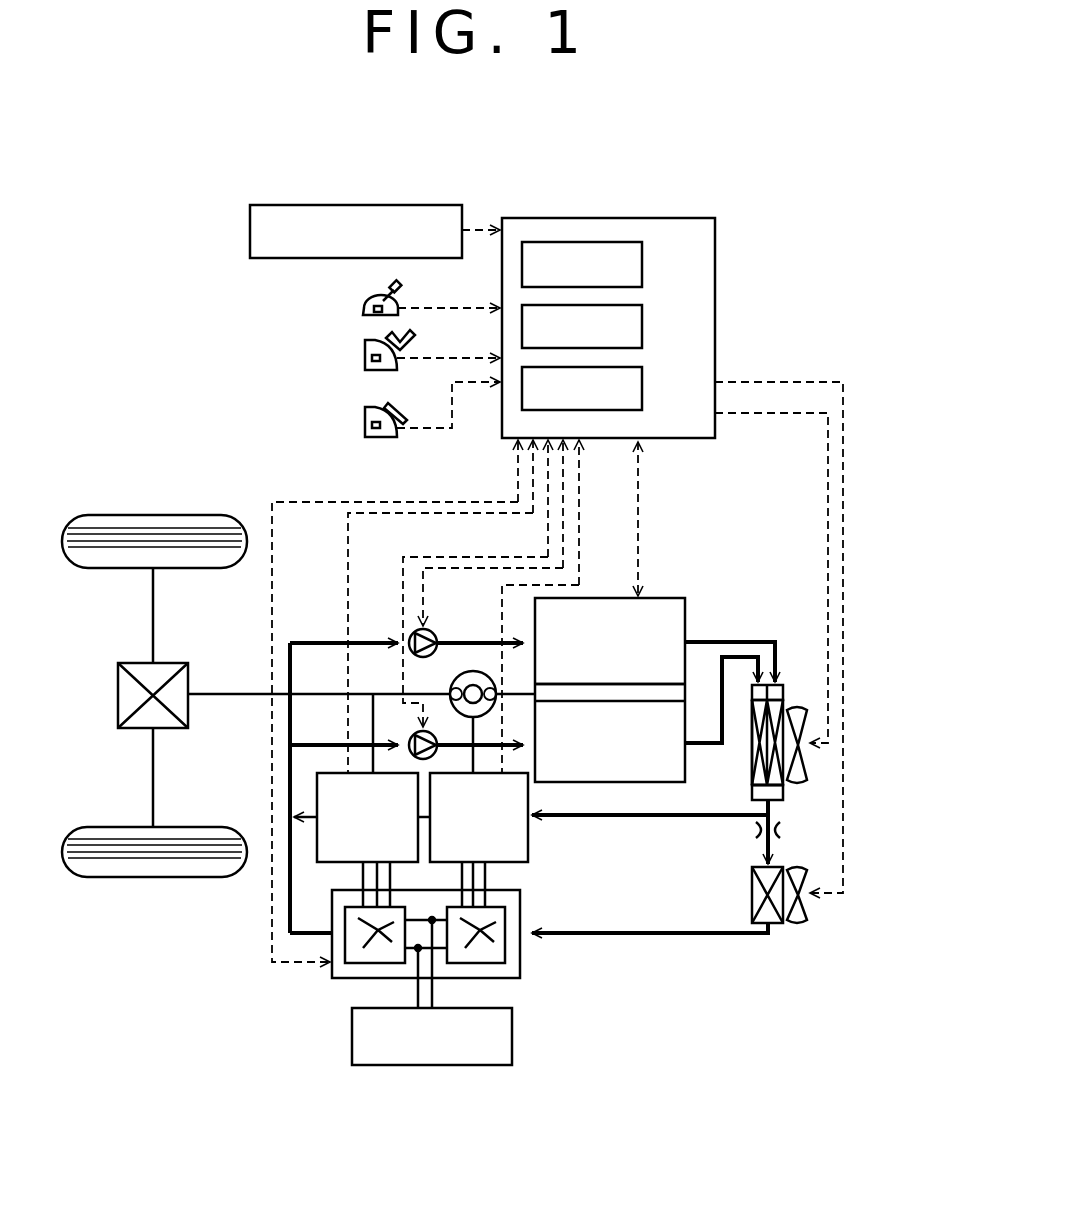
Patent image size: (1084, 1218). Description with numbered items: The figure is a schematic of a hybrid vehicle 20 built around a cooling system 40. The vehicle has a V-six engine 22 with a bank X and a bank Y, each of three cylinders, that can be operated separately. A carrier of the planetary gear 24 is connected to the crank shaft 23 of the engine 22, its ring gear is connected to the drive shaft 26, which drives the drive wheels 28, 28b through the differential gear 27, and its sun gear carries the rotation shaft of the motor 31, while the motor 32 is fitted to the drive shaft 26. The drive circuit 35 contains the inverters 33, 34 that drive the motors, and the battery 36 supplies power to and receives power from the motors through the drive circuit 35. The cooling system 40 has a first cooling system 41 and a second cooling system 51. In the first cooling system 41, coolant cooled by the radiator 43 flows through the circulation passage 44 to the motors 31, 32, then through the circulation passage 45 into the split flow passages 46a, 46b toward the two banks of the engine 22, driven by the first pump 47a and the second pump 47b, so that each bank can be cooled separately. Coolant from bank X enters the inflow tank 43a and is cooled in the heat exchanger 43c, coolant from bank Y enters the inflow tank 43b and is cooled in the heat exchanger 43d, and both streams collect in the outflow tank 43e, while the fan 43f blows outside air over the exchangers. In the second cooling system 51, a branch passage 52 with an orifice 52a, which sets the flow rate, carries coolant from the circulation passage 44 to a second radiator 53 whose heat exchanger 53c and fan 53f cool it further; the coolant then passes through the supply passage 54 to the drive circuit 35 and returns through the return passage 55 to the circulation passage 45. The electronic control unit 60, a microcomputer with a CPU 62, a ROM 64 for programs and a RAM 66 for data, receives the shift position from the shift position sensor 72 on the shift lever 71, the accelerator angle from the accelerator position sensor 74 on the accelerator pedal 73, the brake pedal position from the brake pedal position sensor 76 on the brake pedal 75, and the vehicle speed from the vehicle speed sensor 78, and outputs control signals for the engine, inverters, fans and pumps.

The hybrid vehicle 20 is at (799, 224).
The V-6 engine 22 is at (668, 598).
The crank shaft 23 is at (522, 692).
The planetary gear 24 is at (456, 680).
The drive shaft 26 is at (227, 694).
The differential gear 27 is at (118, 696).
The drive wheel 28 is at (153, 515).
The drive wheel 28b is at (150, 877).
The motor 31 is at (528, 838).
The motor 32 is at (317, 846).
The inverter 33 is at (505, 925).
The inverter 34 is at (362, 964).
The drive circuit 35 is at (520, 962).
The battery 36 is at (512, 1035).
The cooling system 40 is at (746, 1039).
The first cooling system 41 is at (751, 612).
The radiator 43 is at (816, 725).
The inflow tank 43a is at (785, 692).
The inflow tank 43b is at (752, 700).
The heat exchanger 43c is at (787, 706).
The heat exchanger 43d is at (752, 786).
The outflow tank 43e is at (785, 795).
The fan 43f is at (807, 760).
The circulation passage 44 is at (642, 818).
The circulation passage 45 is at (290, 762).
The split flow passage 46a is at (328, 642).
The split flow passage 46b is at (340, 743).
The first pump 47a is at (416, 630).
The second pump 47b is at (416, 733).
The second cooling system 51 is at (745, 955).
The branch passage 52 is at (757, 842).
The orifice 52a is at (792, 832).
The radiator 53 is at (778, 930).
The heat exchanger 53c is at (752, 894).
The fan 53f is at (807, 910).
The supply passage 54 is at (648, 935).
The return passage 55 is at (290, 897).
The electronic control unit 60 is at (715, 325).
The CPU 62 is at (642, 263).
The ROM 64 is at (642, 325).
The RAM 66 is at (642, 387).
The shift lever 71 is at (360, 300).
The shift position sensor 72 is at (368, 311).
The accelerator pedal 73 is at (368, 345).
The accelerator position sensor 74 is at (368, 366).
The brake pedal 75 is at (368, 413).
The brake pedal position sensor 76 is at (368, 432).
The vehicle speed sensor 78 is at (250, 233).